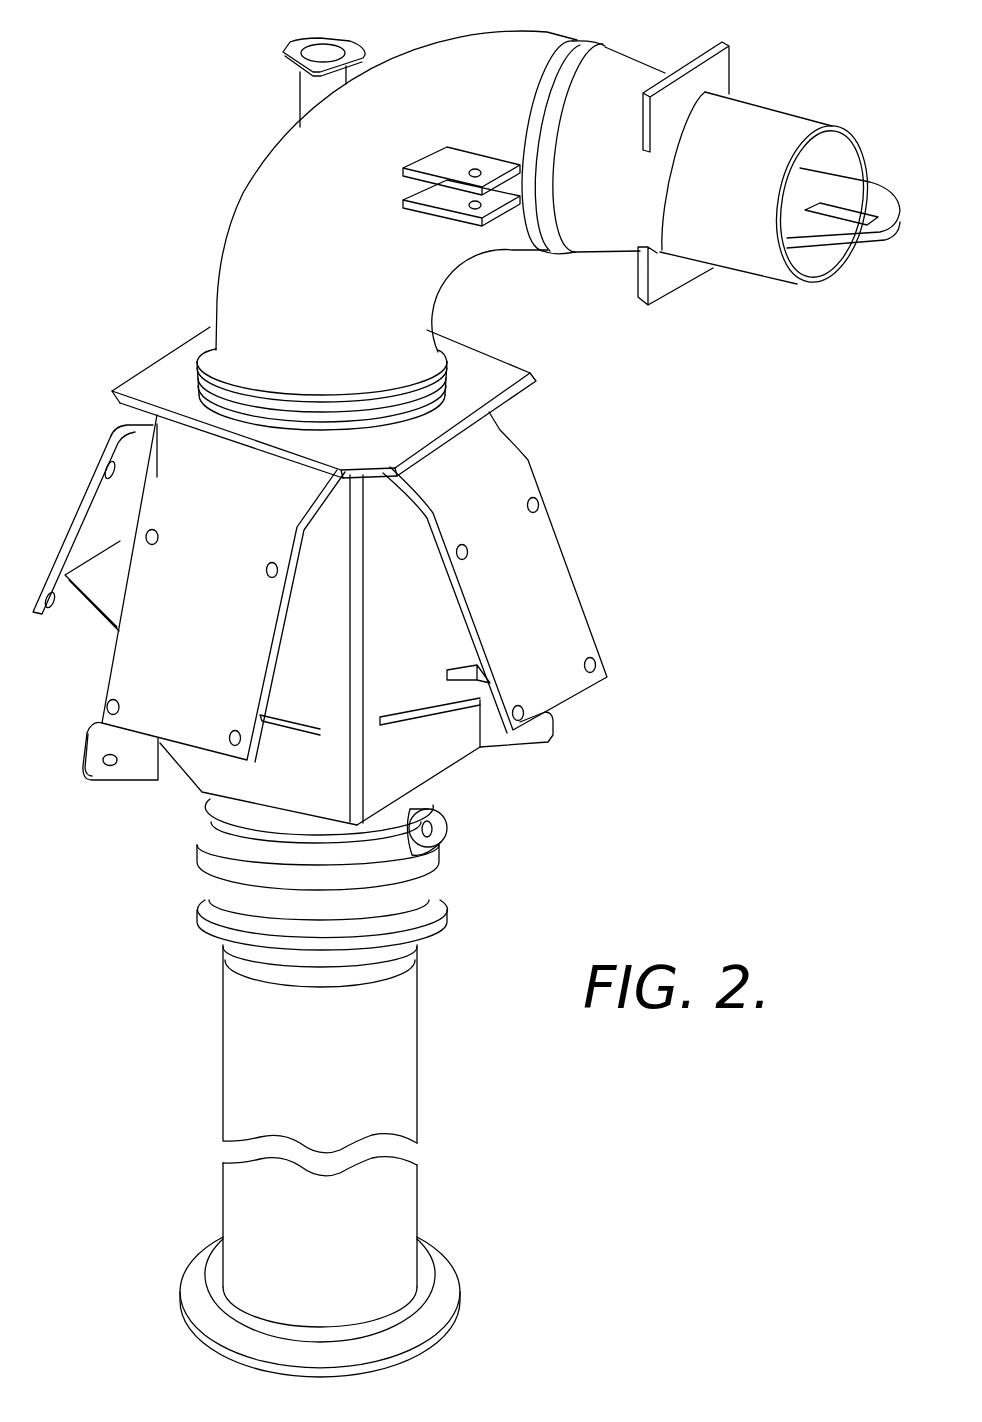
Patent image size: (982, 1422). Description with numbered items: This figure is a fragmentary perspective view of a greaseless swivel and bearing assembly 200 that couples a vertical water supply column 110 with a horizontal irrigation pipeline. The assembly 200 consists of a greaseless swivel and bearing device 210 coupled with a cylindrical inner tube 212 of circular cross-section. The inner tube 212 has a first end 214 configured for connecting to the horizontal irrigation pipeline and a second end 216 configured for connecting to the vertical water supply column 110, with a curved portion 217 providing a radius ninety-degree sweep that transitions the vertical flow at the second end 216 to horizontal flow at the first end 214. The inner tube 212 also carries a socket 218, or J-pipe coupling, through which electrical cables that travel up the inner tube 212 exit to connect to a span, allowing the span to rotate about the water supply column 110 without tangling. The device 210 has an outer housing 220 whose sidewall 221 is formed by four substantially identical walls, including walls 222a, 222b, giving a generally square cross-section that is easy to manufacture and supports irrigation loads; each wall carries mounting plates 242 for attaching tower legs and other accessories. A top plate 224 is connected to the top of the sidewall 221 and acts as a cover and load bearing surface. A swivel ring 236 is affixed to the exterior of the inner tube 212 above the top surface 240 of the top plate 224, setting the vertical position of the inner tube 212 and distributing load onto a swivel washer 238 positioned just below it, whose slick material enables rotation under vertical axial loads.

The vertical water supply column 110 is at (424, 1088).
The greaseless swivel and bearing assembly 200 is at (778, 374).
The greaseless swivel and bearing device 210 is at (612, 540).
The cylindrical inner tube 212 is at (352, 306).
The first end 214 is at (814, 110).
The second end 216 is at (255, 861).
The curved portion 217 is at (280, 140).
The socket 218 is at (333, 36).
The outer housing 220 is at (458, 771).
The sidewall 221 is at (185, 777).
The wall 222a is at (338, 693).
The wall 222b is at (442, 625).
The top plate 224 is at (503, 362).
The swivel ring 236 is at (210, 356).
The swivel washer 238 is at (127, 390).
The top surface 240 is at (387, 455).
The mounting plates 242 is at (545, 608).